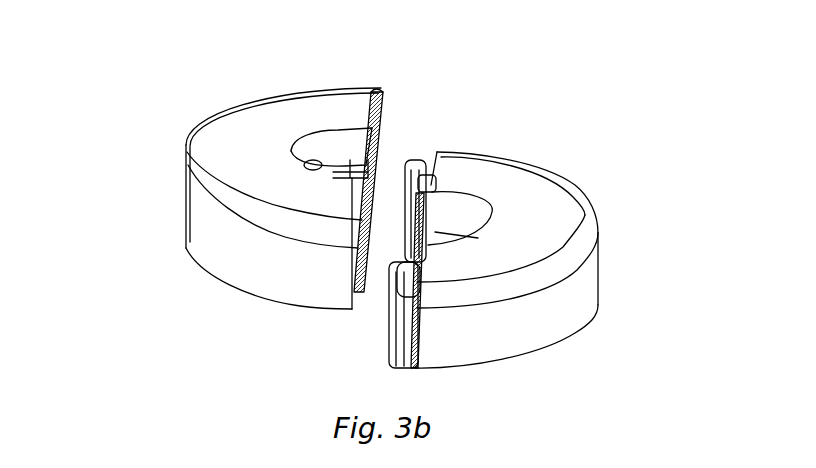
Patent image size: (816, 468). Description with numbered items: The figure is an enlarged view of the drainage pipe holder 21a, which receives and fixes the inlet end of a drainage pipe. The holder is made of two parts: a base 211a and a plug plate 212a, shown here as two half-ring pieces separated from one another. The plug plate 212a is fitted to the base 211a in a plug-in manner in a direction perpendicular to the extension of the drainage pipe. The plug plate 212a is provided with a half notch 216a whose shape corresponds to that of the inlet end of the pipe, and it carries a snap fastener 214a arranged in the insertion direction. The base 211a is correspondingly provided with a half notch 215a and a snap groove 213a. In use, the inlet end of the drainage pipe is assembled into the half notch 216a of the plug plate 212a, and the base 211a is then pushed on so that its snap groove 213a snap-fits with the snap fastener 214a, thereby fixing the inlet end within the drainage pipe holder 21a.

The drainage pipe holder 21a is at (282, 69).
The base 211a is at (553, 307).
The plug plate 212a is at (230, 146).
The snap groove 213a is at (418, 163).
The snap fastener 214a is at (380, 156).
The half notch 215a is at (458, 218).
The half notch 216a is at (329, 162).